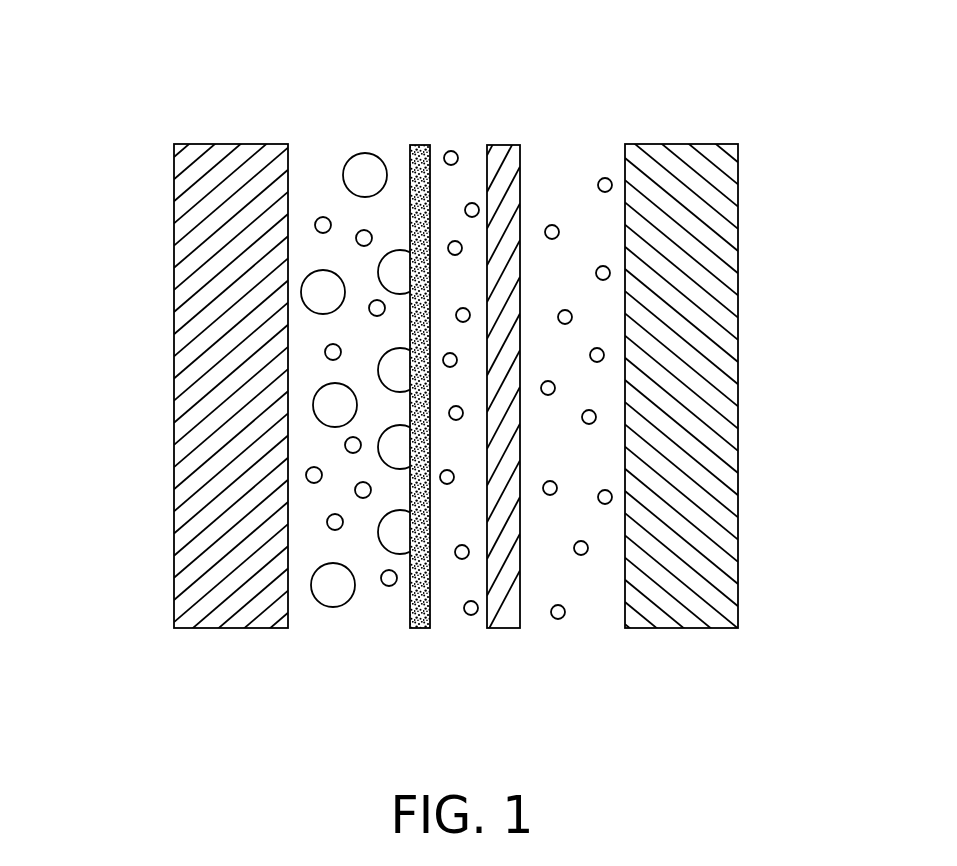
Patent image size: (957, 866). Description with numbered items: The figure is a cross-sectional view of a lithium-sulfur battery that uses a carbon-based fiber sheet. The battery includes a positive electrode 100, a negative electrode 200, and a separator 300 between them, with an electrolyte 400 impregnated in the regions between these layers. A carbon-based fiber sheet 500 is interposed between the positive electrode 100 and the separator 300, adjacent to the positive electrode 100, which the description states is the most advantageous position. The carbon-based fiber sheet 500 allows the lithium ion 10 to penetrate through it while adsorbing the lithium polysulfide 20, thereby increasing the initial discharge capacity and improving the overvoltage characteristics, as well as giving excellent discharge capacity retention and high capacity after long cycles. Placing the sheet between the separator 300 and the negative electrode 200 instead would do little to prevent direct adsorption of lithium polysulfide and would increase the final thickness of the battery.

The positive electrode 100 is at (213, 392).
The negative electrode 200 is at (708, 390).
The separator 300 is at (500, 145).
The electrolyte 400 is at (402, 647).
The carbon-based fiber sheet 500 is at (421, 145).
The lithium polysulfide 20 is at (357, 168).
The lithium ion 10 is at (550, 226).